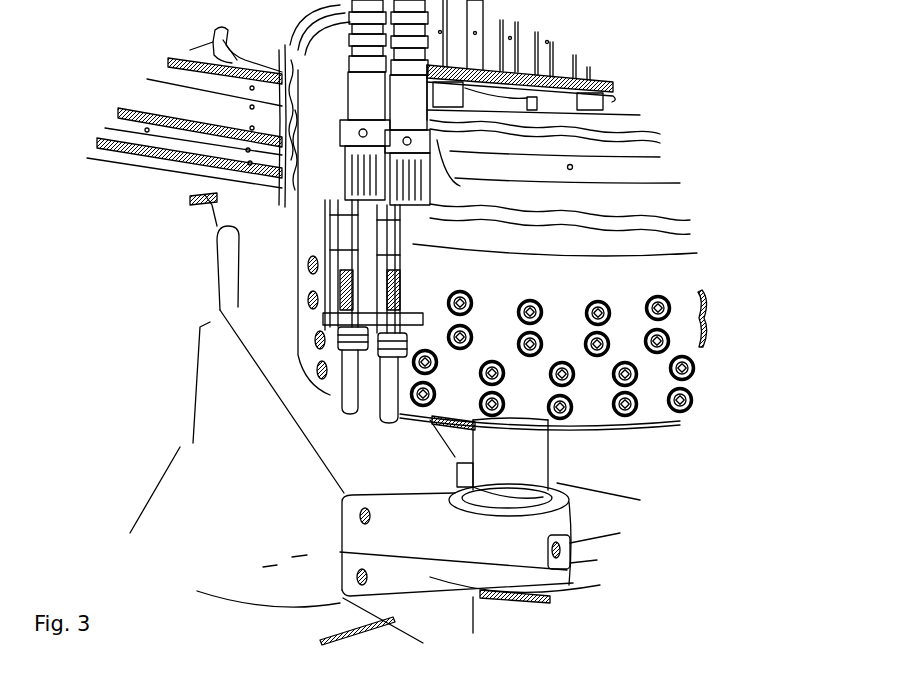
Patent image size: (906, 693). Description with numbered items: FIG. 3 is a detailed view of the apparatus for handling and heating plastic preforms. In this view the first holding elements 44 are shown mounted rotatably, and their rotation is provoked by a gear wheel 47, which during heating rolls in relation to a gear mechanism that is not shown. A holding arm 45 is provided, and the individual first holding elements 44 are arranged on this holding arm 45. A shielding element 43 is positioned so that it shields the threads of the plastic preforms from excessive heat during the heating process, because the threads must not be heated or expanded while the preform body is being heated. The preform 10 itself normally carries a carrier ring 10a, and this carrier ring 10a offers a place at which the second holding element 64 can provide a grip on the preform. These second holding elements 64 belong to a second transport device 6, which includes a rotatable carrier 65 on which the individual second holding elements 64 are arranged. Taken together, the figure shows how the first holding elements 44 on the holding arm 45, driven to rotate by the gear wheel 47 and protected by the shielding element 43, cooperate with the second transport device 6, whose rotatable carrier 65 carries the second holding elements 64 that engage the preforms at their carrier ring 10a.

The second transport device 6 is at (720, 303).
The nozzle 10 is at (347, 410).
The carrier ring 10a is at (313, 363).
The shielding element 43 is at (425, 316).
The first holding elements 44 is at (423, 315).
The holding arm 45 is at (445, 183).
The gear wheel 47 is at (352, 183).
The second holding element 64 is at (423, 377).
The rotatable carrier 65 is at (585, 363).